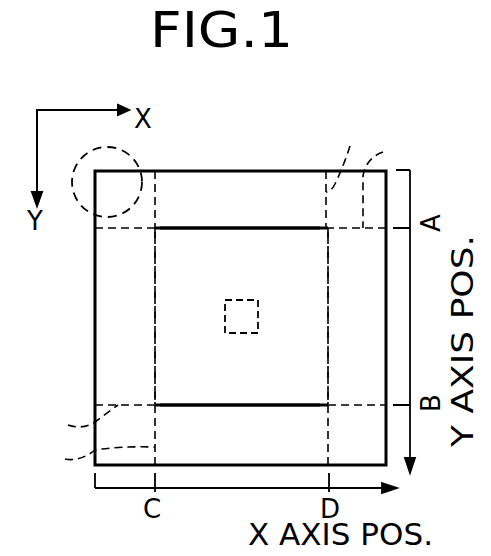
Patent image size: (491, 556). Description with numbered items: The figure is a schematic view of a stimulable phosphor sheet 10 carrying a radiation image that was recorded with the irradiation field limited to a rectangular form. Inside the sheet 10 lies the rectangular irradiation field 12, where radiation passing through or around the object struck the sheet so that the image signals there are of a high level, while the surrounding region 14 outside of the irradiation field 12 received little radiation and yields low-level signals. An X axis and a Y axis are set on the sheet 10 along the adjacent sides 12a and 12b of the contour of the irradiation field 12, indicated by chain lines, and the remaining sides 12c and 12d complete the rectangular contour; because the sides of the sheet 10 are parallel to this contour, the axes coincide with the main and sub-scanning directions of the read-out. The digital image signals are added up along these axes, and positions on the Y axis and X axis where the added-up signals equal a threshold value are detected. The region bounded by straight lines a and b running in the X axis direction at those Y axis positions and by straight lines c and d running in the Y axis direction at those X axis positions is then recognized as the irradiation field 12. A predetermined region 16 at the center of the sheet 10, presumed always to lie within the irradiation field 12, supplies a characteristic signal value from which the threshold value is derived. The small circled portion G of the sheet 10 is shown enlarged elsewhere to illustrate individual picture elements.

The stimulable phosphor sheet 10 is at (283, 170).
The irradiation field 12 is at (293, 270).
The side of the contour of the irradiation field 12a is at (210, 226).
The side of the contour of the irradiation field 12b is at (155, 306).
The lower edge of region 12 12c is at (244, 407).
The right edge of region 12 12d is at (328, 268).
The region outside of the irradiation field 14 is at (304, 208).
The predetermined region 16 is at (243, 334).
The portion G is at (84, 214).
The straight line a is at (381, 183).
The straight line b is at (81, 420).
The straight line c is at (98, 459).
The straight line d is at (345, 153).